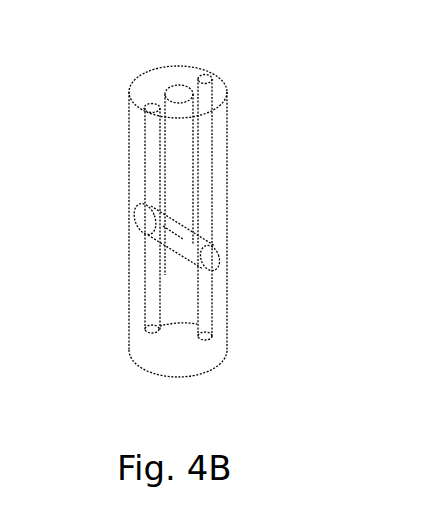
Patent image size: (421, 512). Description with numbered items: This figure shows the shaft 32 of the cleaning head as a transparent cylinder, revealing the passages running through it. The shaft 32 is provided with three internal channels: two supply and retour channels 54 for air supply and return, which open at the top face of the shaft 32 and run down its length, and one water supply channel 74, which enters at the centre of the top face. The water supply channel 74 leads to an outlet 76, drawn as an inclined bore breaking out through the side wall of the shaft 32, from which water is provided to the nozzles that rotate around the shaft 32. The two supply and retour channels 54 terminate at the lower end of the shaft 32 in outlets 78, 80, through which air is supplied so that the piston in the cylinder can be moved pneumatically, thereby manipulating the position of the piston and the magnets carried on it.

The shaft 32 is at (234, 46).
The supply and retour channels 54 is at (151, 108).
The water supply channel 74 is at (178, 97).
The outlet 76 is at (212, 257).
The outlet 78 is at (152, 329).
The outlet 80 is at (207, 336).